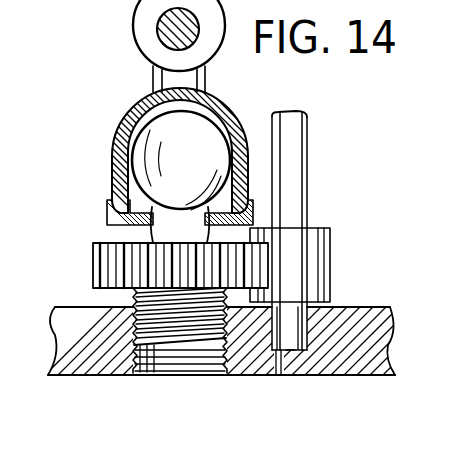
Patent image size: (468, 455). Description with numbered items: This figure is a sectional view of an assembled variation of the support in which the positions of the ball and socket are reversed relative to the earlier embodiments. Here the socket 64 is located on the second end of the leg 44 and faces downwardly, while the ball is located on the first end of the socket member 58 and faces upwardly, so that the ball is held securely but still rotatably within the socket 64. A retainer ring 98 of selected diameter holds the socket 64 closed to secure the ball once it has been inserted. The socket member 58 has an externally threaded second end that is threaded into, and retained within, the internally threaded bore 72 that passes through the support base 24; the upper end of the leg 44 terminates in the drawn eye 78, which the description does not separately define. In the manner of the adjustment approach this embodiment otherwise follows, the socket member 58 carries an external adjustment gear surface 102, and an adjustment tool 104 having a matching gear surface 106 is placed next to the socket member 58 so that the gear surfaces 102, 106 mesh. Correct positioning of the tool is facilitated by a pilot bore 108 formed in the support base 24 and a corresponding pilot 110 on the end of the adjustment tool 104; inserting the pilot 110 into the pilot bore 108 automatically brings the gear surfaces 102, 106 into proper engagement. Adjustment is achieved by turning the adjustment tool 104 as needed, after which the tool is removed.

The support base 24 is at (55, 330).
The leg 44 is at (208, 80).
The socket member 58 is at (183, 343).
The socket 64 is at (120, 116).
The bore 72 is at (172, 372).
The ring eye 78 is at (157, 32).
The retainer ring 98 is at (107, 210).
The external adjustment gear surface 102 is at (93, 263).
The adjustment tool 104 is at (308, 172).
The gear surface 106 is at (330, 262).
The pilot bore 108 is at (283, 375).
The pilot 110 is at (289, 350).